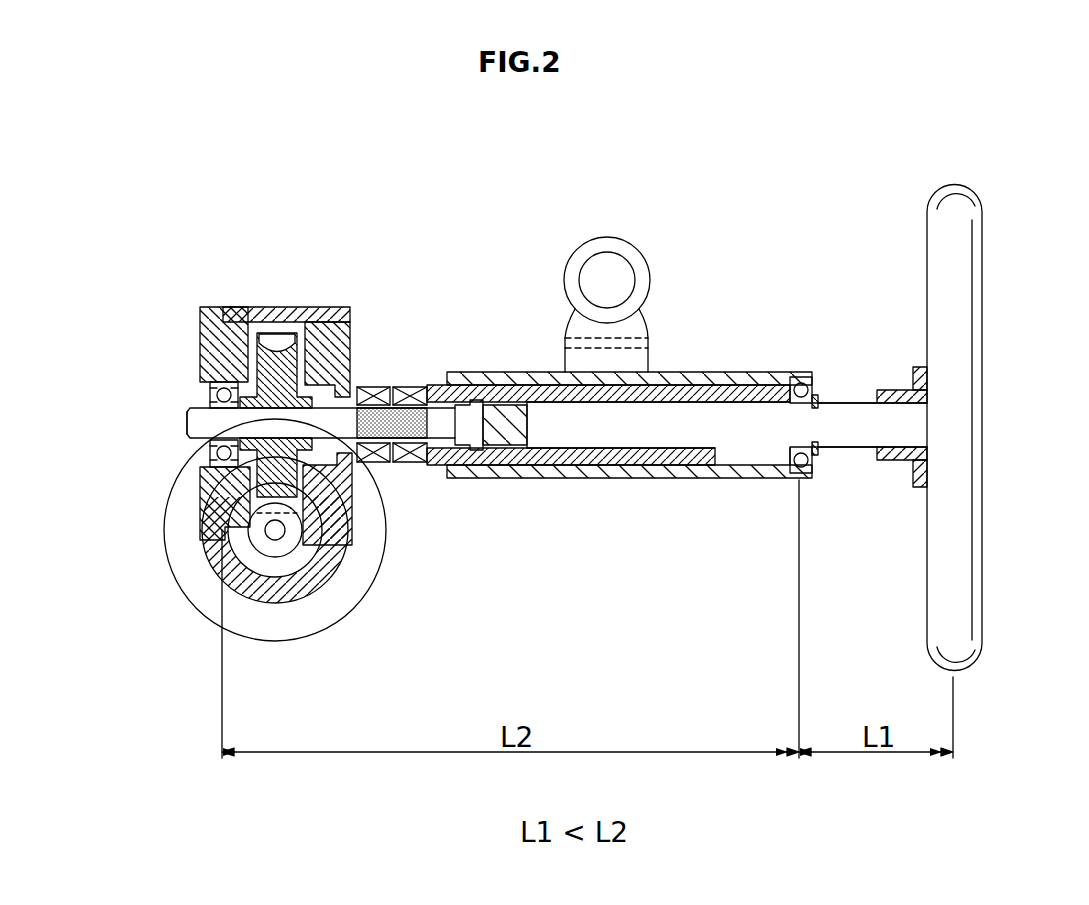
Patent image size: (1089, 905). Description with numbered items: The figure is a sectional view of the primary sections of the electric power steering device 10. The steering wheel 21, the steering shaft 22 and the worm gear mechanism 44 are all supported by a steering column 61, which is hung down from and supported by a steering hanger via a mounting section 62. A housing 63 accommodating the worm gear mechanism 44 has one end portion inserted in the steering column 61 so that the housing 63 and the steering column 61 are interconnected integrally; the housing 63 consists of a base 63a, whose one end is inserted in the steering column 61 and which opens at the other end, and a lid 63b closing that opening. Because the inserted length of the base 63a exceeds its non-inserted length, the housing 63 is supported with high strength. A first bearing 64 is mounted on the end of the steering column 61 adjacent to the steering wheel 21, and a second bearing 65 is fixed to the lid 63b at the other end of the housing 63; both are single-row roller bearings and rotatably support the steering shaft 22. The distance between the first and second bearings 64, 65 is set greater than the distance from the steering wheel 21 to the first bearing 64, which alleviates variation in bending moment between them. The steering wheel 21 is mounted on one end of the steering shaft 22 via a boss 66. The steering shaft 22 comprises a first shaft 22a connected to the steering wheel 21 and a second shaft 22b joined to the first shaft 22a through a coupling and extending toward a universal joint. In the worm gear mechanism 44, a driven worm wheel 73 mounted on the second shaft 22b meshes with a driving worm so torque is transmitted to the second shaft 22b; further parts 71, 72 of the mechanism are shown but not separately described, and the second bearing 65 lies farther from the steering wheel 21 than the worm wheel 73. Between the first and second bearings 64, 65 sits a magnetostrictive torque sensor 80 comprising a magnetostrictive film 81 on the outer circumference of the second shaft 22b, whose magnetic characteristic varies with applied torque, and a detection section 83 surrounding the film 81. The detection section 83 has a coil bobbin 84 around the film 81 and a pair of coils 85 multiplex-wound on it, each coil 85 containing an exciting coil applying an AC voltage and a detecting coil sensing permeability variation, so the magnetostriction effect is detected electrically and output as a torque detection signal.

The steering device 10 is at (92, 122).
The steering wheel 21 is at (975, 193).
The steering shaft 22 is at (747, 388).
The first shaft 22a is at (855, 450).
The second shaft 22b is at (192, 406).
The worm gear mechanism 44 is at (356, 544).
The steering column 61 is at (740, 480).
The mounting section 62 is at (615, 240).
The housing 63 is at (187, 377).
The base 63a is at (248, 307).
The lid 63b is at (200, 345).
The first bearing 64 is at (812, 385).
The second bearing 65 is at (212, 455).
The boss 66 is at (897, 390).
The wheel hub 71 is at (287, 532).
The wheel 72 is at (280, 560).
The worm wheel 73 is at (332, 480).
The magnetostrictive torque sensor 80 is at (444, 299).
The magnetostrictive film 81 is at (470, 412).
The detection section 83 is at (420, 326).
The coil bobbin 84 is at (362, 385).
The coils 85 is at (416, 385).